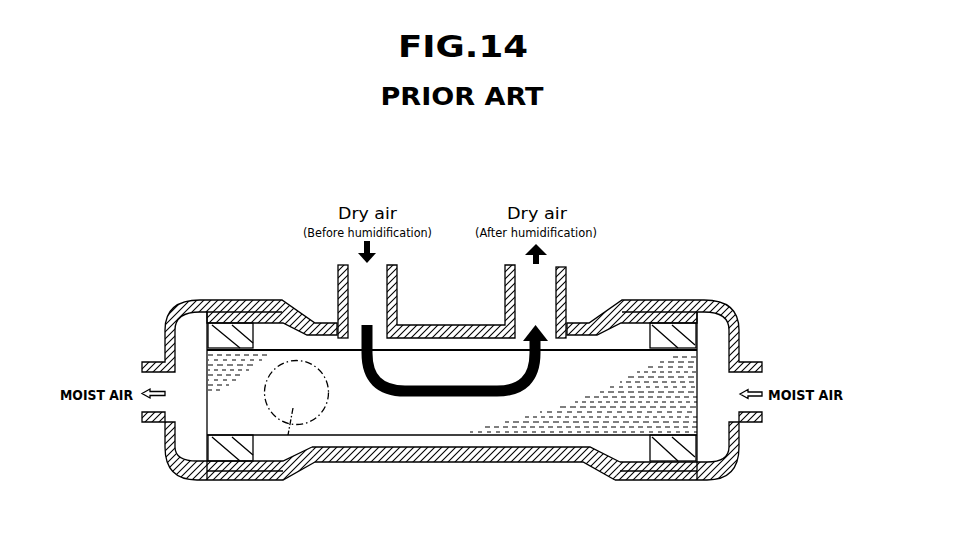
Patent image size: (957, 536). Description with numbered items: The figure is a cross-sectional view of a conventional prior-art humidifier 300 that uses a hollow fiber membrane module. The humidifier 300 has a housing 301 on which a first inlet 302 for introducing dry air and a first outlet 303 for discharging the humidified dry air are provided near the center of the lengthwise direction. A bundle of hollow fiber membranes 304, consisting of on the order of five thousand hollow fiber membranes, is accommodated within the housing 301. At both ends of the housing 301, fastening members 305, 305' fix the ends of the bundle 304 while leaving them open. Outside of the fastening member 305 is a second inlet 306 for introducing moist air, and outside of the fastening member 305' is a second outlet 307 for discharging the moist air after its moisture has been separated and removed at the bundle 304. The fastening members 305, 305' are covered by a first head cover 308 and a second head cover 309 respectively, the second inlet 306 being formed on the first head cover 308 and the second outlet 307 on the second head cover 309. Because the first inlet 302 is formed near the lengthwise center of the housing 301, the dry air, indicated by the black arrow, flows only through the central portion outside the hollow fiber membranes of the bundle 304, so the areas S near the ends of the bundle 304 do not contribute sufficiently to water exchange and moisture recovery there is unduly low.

The humidifier 300 is at (457, 243).
The housing 301 is at (507, 462).
The first inlet 302 is at (337, 273).
The first outlet 303 is at (567, 268).
The bundle of hollow fiber membranes 304 is at (382, 417).
The fastening member 305 is at (671, 422).
The fastening member 305' is at (235, 421).
The second inlet 306 is at (743, 424).
The second outlet 307 is at (160, 424).
The first head cover 308 is at (720, 306).
The second head cover 309 is at (185, 308).
The areas S is at (308, 455).